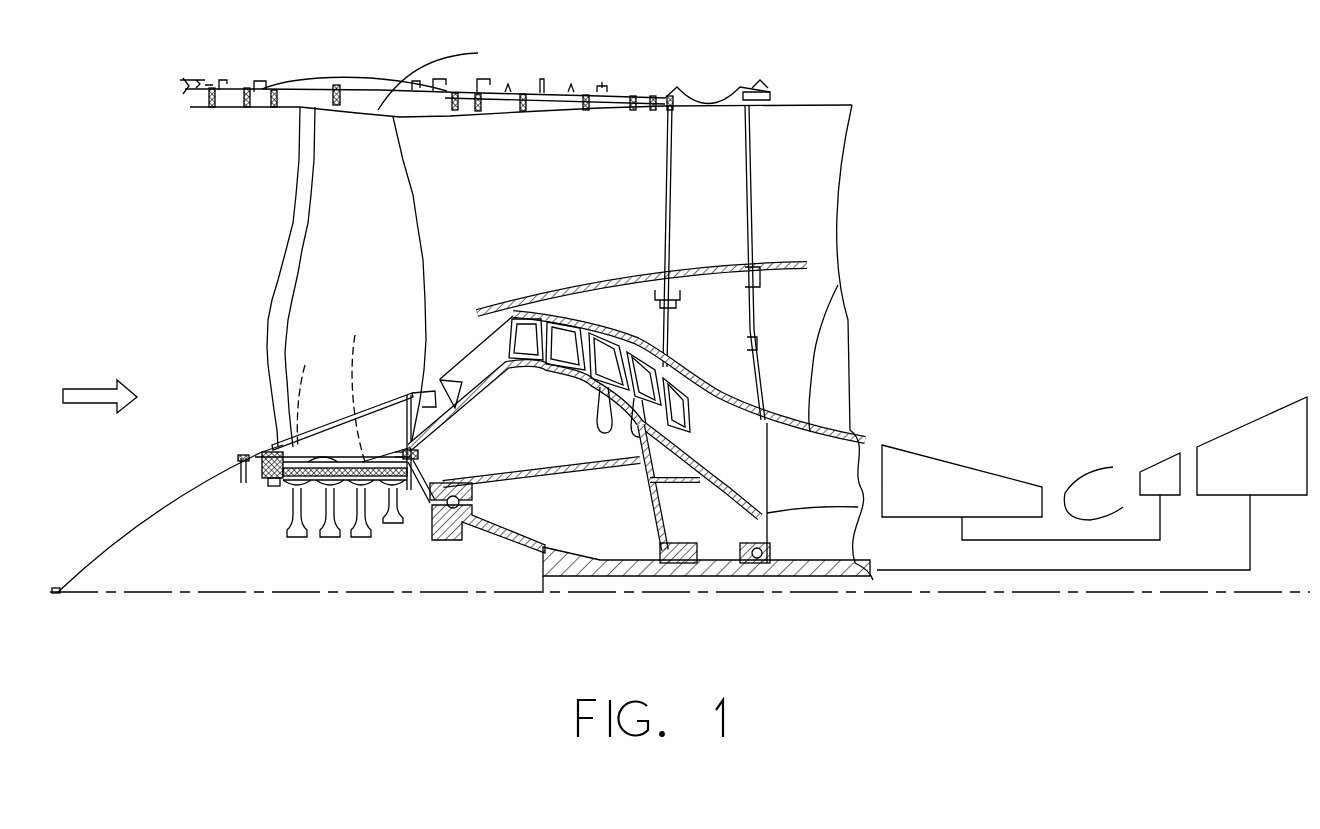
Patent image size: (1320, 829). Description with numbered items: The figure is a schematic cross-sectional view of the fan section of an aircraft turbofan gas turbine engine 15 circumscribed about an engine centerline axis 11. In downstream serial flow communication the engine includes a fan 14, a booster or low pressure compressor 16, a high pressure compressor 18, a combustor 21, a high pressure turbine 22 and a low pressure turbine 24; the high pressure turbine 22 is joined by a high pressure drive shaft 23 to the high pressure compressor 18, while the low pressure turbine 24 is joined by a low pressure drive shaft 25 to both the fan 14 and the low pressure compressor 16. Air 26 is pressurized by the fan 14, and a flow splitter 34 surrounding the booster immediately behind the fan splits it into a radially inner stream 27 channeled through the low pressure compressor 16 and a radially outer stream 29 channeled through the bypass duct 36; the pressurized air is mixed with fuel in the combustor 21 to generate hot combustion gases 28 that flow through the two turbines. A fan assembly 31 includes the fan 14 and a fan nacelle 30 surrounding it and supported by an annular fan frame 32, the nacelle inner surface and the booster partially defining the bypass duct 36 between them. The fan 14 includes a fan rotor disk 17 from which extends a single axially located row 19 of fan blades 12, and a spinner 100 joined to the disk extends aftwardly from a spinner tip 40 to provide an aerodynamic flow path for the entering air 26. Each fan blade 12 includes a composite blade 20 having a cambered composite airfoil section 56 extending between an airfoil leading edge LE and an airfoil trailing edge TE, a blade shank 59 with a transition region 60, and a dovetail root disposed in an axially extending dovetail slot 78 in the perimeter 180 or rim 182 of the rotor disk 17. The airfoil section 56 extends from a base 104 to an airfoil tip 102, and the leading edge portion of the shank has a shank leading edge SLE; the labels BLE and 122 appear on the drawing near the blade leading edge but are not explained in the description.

The engine centerline axis 11 is at (178, 594).
The fan blades 12 is at (196, 548).
The fan 14 is at (240, 336).
The gas turbine engine 15 is at (207, 656).
The low pressure compressor 16 is at (605, 308).
The fan rotor disk 17 is at (364, 395).
The high pressure compressor 18 is at (975, 501).
The row of fan blades 19 is at (336, 84).
The composite blade 20 is at (305, 220).
The combustor 21 is at (1068, 500).
The high pressure turbine 22 is at (1148, 470).
The high pressure drive shaft 23 is at (1085, 545).
The low pressure turbine 24 is at (1267, 468).
The low pressure drive shaft 25 is at (990, 575).
The air 26 is at (93, 387).
The radially inner stream 27 is at (492, 349).
The hot combustion gases 28 is at (1115, 487).
The radially outer stream 29 is at (480, 190).
The fan nacelle 30 is at (360, 84).
The fan assembly 31 is at (388, 591).
The fan frame 32 is at (752, 322).
The flow splitter 34 is at (490, 306).
The bypass duct 36 is at (629, 174).
The spinner tip 40 is at (53, 594).
The composite airfoil section 56 is at (373, 236).
The blade shank 59 is at (410, 416).
The transition region 60 is at (300, 392).
The dovetail slot 78 is at (333, 444).
The spinner 100 is at (165, 478).
The airfoil tip 102 is at (516, 76).
The base of the composite airfoil section 104 is at (354, 352).
The blade root leading edge 122 is at (268, 410).
The perimeter of the rotor disk 180 is at (272, 481).
The rim of the rotor disk 182 is at (340, 490).
The airfoil leading edge LE is at (288, 272).
The blade leading edge BLE is at (268, 308).
The shank leading edge SLE is at (270, 420).
The airfoil trailing edge TE is at (423, 257).